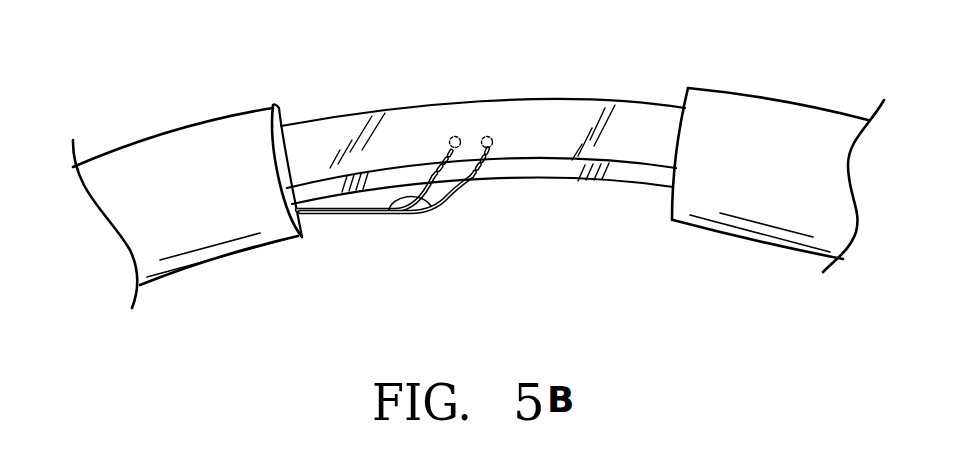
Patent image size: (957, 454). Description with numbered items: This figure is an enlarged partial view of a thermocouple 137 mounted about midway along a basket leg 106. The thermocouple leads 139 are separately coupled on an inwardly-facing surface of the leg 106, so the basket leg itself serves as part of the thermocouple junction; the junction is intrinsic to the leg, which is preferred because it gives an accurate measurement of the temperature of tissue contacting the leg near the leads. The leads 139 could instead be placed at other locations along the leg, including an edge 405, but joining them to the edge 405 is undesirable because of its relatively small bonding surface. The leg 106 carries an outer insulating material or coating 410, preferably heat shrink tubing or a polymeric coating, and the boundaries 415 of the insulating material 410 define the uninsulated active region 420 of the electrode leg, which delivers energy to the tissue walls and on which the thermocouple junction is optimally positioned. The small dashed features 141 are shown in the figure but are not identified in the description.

The basket leg 106 is at (630, 100).
The thermocouple 137 is at (412, 238).
The leads 139 is at (382, 211).
The electrodes 141 is at (453, 136).
The edge 405 is at (632, 174).
The insulating material or coating 410 is at (187, 125).
The boundaries 415 is at (277, 108).
The active region 420 is at (527, 164).